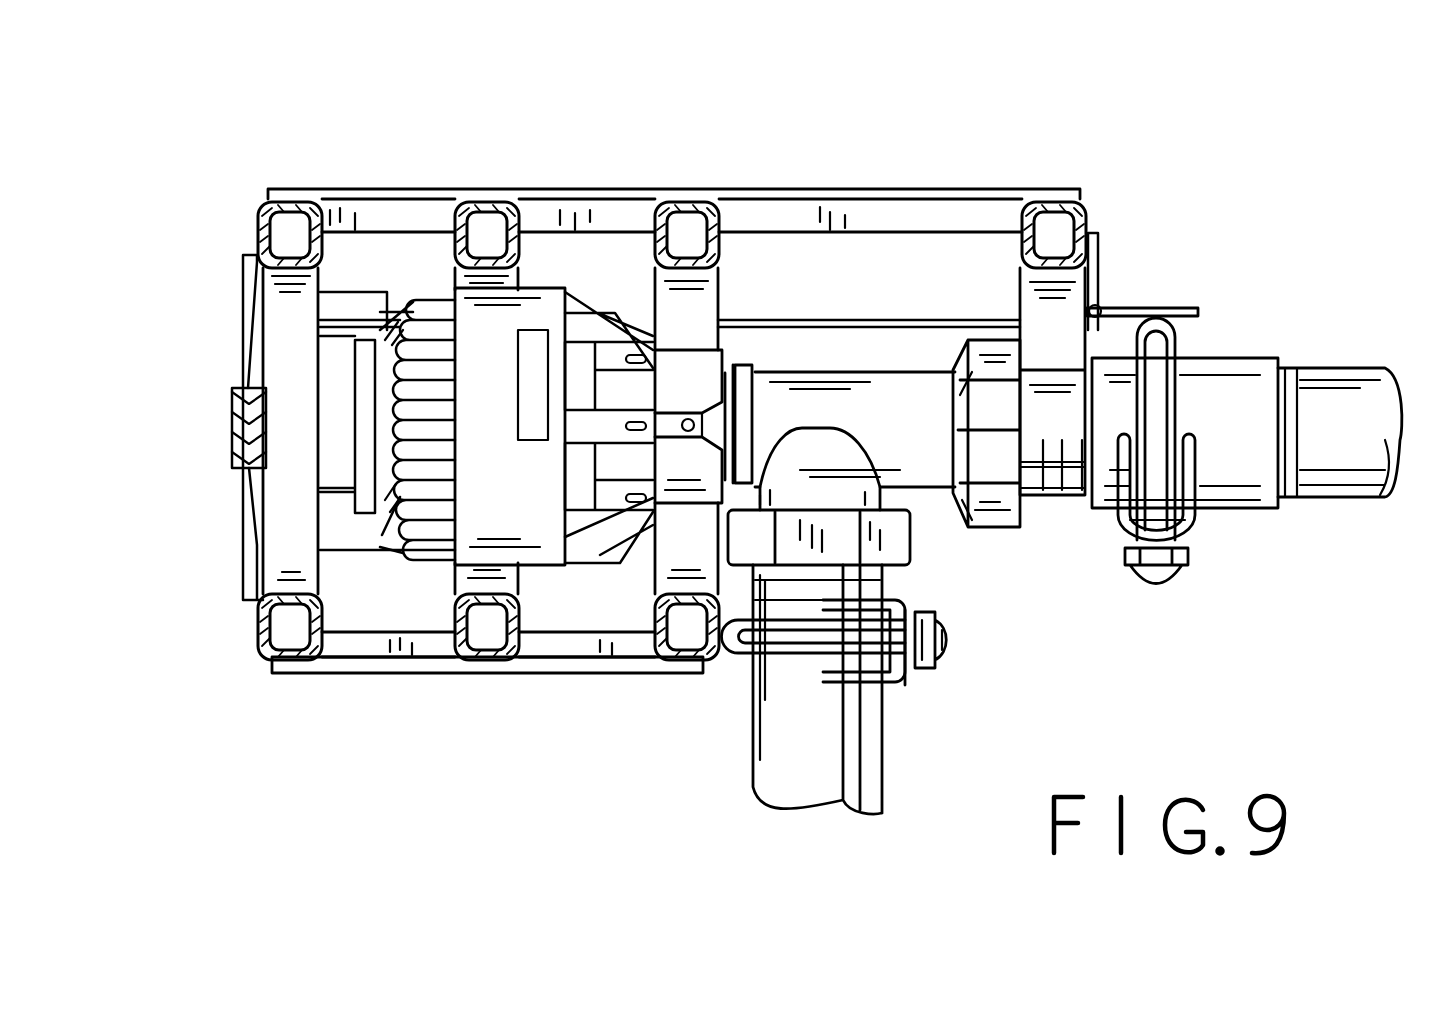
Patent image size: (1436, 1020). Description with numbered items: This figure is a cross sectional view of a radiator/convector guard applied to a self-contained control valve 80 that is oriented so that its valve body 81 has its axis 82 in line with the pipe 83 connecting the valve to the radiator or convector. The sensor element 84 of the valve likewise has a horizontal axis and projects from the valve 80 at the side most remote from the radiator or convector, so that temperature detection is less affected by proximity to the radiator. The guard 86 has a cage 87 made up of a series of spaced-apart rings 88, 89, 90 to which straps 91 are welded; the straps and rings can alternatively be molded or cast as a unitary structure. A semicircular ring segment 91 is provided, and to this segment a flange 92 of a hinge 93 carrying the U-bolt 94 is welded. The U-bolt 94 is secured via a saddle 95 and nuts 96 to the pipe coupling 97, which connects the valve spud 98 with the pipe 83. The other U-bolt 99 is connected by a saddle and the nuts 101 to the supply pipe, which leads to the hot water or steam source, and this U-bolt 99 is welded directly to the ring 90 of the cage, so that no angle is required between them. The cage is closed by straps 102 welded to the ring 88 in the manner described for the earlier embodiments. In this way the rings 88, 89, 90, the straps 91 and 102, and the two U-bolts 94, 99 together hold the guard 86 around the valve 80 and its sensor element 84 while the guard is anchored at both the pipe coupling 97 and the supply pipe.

The self-contained control valve 80 is at (793, 372).
The valve body 81 is at (872, 372).
The axis 82 is at (803, 428).
The pipe 83 is at (1343, 370).
The sensor element 84 is at (552, 300).
The guard 86 is at (390, 674).
The cage 87 is at (267, 207).
The ring 88 is at (320, 613).
The ring 89 is at (527, 600).
The ring 90 is at (628, 613).
The straps 91 is at (447, 673).
The flange 92 is at (1094, 262).
The hinge 93 is at (1101, 310).
The U-bolt 94 is at (1152, 402).
The saddle 95 is at (1197, 525).
The nuts 96 is at (1153, 588).
The pipe coupling 97 is at (1262, 487).
The valve spud 98 is at (1040, 433).
The U-bolt 99 is at (783, 637).
The nuts 101 is at (933, 613).
The straps 102 is at (245, 330).